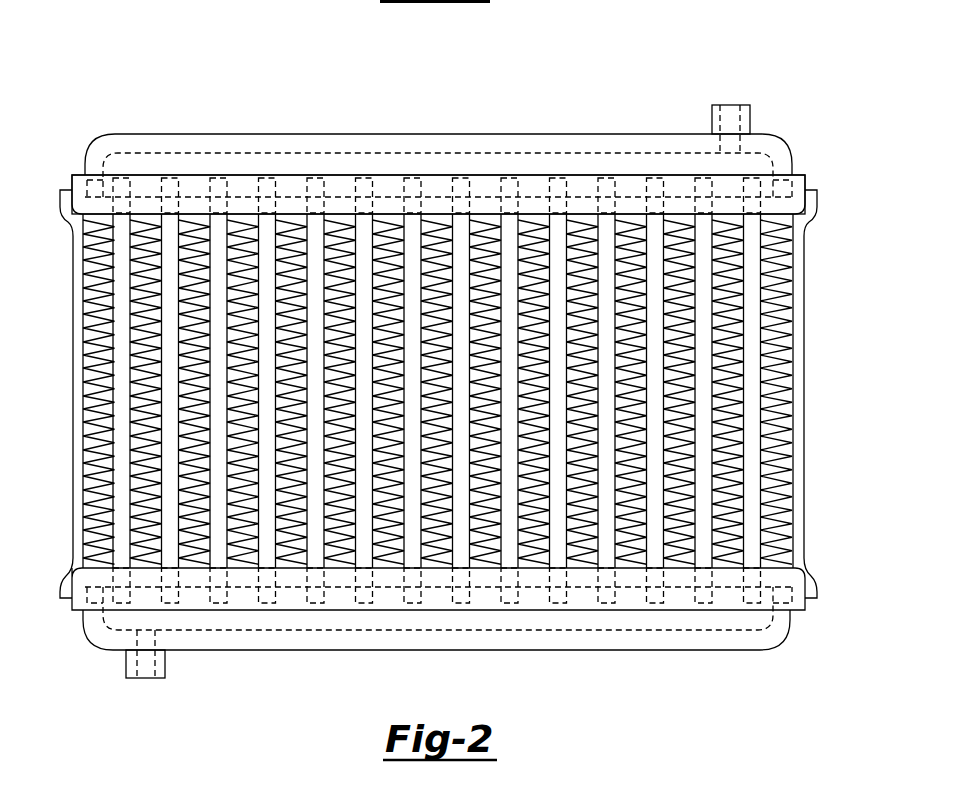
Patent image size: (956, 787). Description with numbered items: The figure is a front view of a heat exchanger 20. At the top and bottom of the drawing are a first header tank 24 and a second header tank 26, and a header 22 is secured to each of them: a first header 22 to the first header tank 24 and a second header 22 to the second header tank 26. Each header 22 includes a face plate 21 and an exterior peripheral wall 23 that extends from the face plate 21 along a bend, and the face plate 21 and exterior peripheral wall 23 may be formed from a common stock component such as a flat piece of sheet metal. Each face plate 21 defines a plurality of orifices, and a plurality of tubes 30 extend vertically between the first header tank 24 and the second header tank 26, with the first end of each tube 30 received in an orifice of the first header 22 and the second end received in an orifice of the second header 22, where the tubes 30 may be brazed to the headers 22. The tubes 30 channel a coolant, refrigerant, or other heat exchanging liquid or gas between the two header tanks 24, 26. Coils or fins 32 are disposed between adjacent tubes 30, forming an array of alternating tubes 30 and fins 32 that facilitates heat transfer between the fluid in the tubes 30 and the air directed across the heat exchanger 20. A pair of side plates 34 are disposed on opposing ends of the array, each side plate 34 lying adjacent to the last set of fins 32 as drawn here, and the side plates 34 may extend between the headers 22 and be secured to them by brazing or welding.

The heat exchanger 20 is at (162, 55).
The face plate 21 is at (763, 178).
The header 22 is at (680, 176).
The exterior peripheral wall 23 is at (805, 180).
The first header tank 24 is at (240, 132).
The second header tank 26 is at (241, 651).
The tube 30 is at (320, 236).
The fin 32 is at (198, 225).
The side plate 34 is at (60, 468).